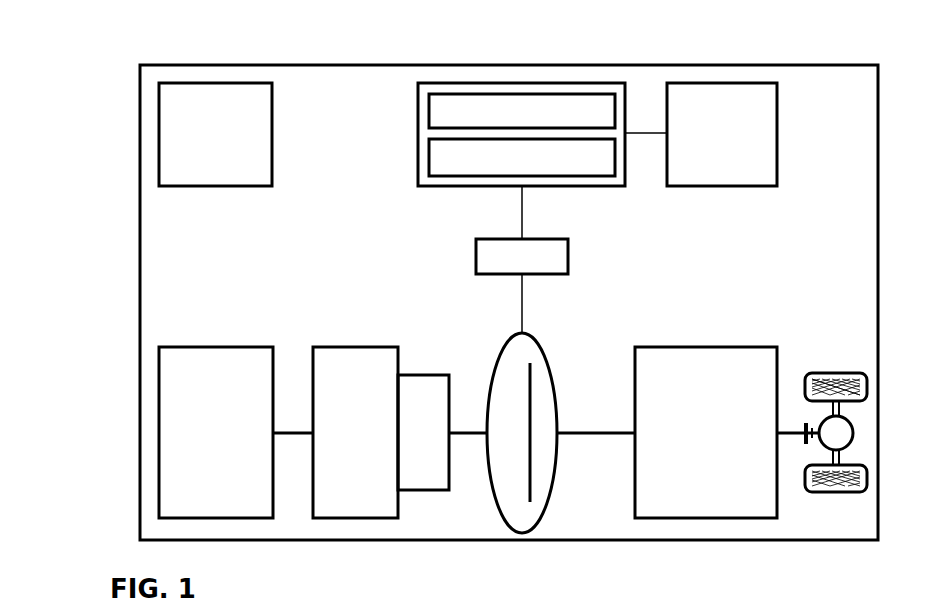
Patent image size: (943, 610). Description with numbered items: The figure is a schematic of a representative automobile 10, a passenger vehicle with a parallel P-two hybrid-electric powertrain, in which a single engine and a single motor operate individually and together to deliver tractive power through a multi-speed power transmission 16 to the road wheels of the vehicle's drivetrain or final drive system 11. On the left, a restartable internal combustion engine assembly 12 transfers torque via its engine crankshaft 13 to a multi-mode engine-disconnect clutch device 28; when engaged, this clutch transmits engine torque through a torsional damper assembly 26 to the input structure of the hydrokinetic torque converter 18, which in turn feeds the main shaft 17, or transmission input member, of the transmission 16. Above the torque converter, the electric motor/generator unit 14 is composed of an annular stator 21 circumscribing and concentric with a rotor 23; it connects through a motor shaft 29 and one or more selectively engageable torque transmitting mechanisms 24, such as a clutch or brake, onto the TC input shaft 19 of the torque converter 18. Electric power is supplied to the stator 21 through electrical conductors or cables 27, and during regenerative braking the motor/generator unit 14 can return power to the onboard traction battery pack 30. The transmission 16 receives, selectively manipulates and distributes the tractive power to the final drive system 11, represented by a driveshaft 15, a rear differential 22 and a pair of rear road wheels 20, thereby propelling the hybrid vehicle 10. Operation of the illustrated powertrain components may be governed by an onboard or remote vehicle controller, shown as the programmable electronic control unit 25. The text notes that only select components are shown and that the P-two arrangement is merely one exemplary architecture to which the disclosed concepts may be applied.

The automobile 10 is at (128, 47).
The final drive system 11 is at (856, 258).
The internal combustion engine assembly 12 is at (171, 347).
The engine crankshaft 13 is at (291, 432).
The electric motor/generator unit 14 is at (490, 98).
The driveshaft 15 is at (794, 432).
The multi-speed power transmission 16 is at (648, 347).
The main shaft 17 is at (590, 432).
The hydrokinetic torque converter 18 is at (552, 486).
The TC input shaft 19 is at (469, 432).
The rear road wheels 20 is at (832, 373).
The annular stator 21 is at (429, 100).
The rear differential 22 is at (853, 428).
The rotor 23 is at (429, 144).
The torque transmitting mechanisms 24 is at (476, 244).
The electronic control unit 25 is at (174, 83).
The torsional damper assembly 26 is at (422, 375).
The electrical conductors or cables 27 is at (636, 133).
The engine-disconnect clutch device 28 is at (331, 347).
The motor shaft 29 is at (520, 212).
The traction battery pack 30 is at (695, 83).